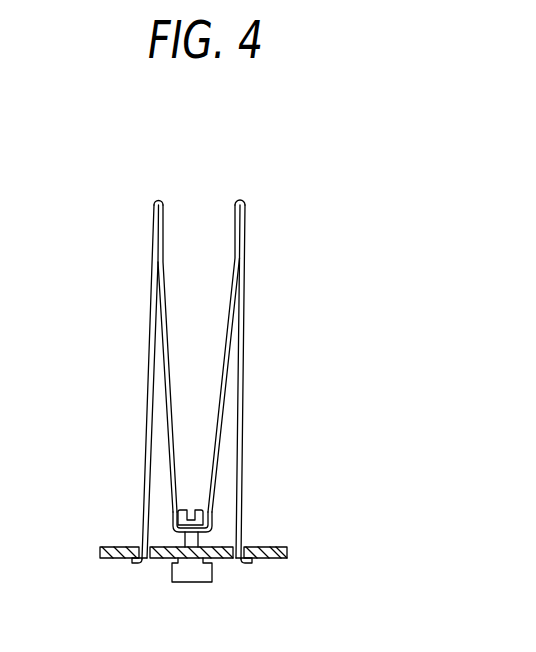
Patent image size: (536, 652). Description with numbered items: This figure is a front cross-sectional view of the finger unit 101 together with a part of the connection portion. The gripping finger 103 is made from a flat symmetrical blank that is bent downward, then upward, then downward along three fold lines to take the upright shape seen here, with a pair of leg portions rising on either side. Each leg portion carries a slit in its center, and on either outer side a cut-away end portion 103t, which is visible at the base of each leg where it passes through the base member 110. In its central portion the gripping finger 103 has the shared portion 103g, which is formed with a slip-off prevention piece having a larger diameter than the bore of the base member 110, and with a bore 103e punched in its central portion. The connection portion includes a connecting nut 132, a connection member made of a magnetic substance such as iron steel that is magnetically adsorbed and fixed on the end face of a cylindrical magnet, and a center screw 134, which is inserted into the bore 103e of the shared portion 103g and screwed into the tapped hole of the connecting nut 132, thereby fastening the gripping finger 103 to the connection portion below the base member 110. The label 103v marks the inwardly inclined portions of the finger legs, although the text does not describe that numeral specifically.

The contact assembly 101 is at (321, 183).
The gripping finger 103 is at (245, 238).
The spring portion of contact 103v is at (243, 367).
The center screw 134 is at (200, 508).
The shared portion 103g is at (215, 524).
The bore 103e is at (175, 522).
The cut-away end portion 103t is at (135, 565).
The base member 110 is at (277, 565).
The connecting nut 132 is at (193, 582).